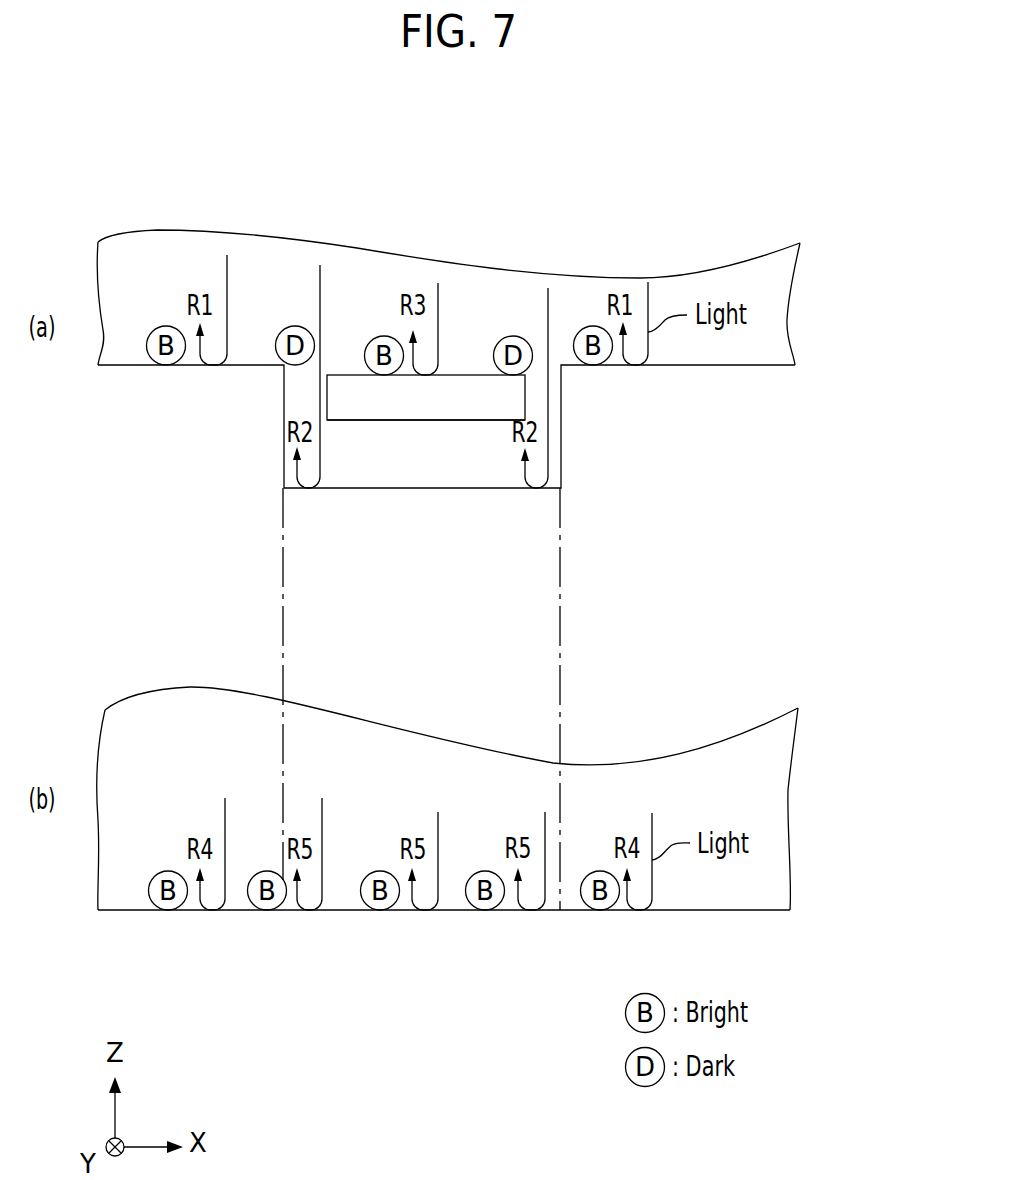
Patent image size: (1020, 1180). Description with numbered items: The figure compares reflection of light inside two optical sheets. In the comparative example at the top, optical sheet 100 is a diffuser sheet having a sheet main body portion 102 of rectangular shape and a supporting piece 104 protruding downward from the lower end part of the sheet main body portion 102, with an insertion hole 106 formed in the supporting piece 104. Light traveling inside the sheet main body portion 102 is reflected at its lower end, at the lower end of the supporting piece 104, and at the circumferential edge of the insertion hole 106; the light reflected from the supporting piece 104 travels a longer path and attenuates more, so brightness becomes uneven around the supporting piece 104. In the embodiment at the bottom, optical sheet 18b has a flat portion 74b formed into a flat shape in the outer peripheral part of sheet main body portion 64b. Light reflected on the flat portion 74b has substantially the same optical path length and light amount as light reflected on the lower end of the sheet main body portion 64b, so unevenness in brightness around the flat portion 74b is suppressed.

The optical sheet 100 is at (787, 313).
The sheet main body portion 102 is at (750, 265).
The supporting piece 104 is at (477, 466).
The insertion hole 106 is at (400, 405).
The optical sheet 18b is at (782, 783).
The sheet main body portion 64b is at (700, 755).
The flat portion 74b is at (455, 897).